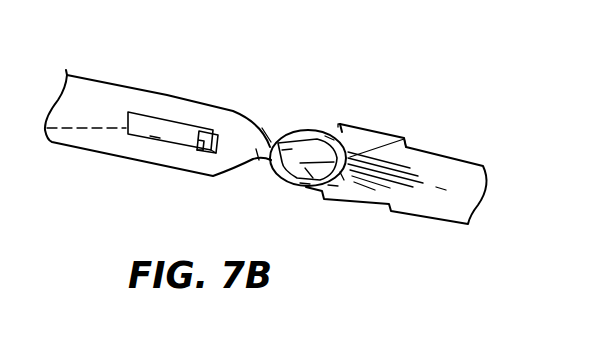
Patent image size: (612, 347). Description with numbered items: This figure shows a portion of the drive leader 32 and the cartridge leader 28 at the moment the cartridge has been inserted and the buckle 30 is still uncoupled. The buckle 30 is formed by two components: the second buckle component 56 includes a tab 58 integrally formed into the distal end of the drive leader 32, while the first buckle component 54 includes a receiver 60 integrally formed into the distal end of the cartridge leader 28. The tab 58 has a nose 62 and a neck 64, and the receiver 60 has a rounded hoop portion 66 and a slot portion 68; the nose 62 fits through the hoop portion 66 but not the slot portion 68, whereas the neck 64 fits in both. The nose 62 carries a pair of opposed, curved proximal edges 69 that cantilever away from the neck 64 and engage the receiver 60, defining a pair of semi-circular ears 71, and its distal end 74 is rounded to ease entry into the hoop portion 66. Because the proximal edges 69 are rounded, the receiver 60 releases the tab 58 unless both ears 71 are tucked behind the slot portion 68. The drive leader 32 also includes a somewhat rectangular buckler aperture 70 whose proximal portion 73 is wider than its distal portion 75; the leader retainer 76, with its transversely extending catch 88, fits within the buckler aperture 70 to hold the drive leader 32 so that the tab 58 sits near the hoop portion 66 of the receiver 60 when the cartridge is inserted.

The cartridge leader 28 is at (428, 220).
The buckle 30 is at (321, 68).
The drive leader 32 is at (90, 76).
The first buckle component 54 is at (305, 133).
The second buckle component 56 is at (300, 148).
The tab 58 is at (343, 127).
The receiver 60 is at (333, 186).
The nose 62 is at (350, 158).
The neck 64 is at (258, 160).
The hoop portion 66 is at (342, 176).
The slot portion 68 is at (271, 142).
The proximal edges 69 is at (329, 135).
The buckler aperture 70 is at (155, 143).
The ears 71 is at (333, 134).
The proximal portion 73 is at (127, 112).
The distal end 74 is at (407, 138).
The distal portion 75 is at (218, 148).
The leader retainer 76 is at (200, 147).
The catch 88 is at (213, 131).